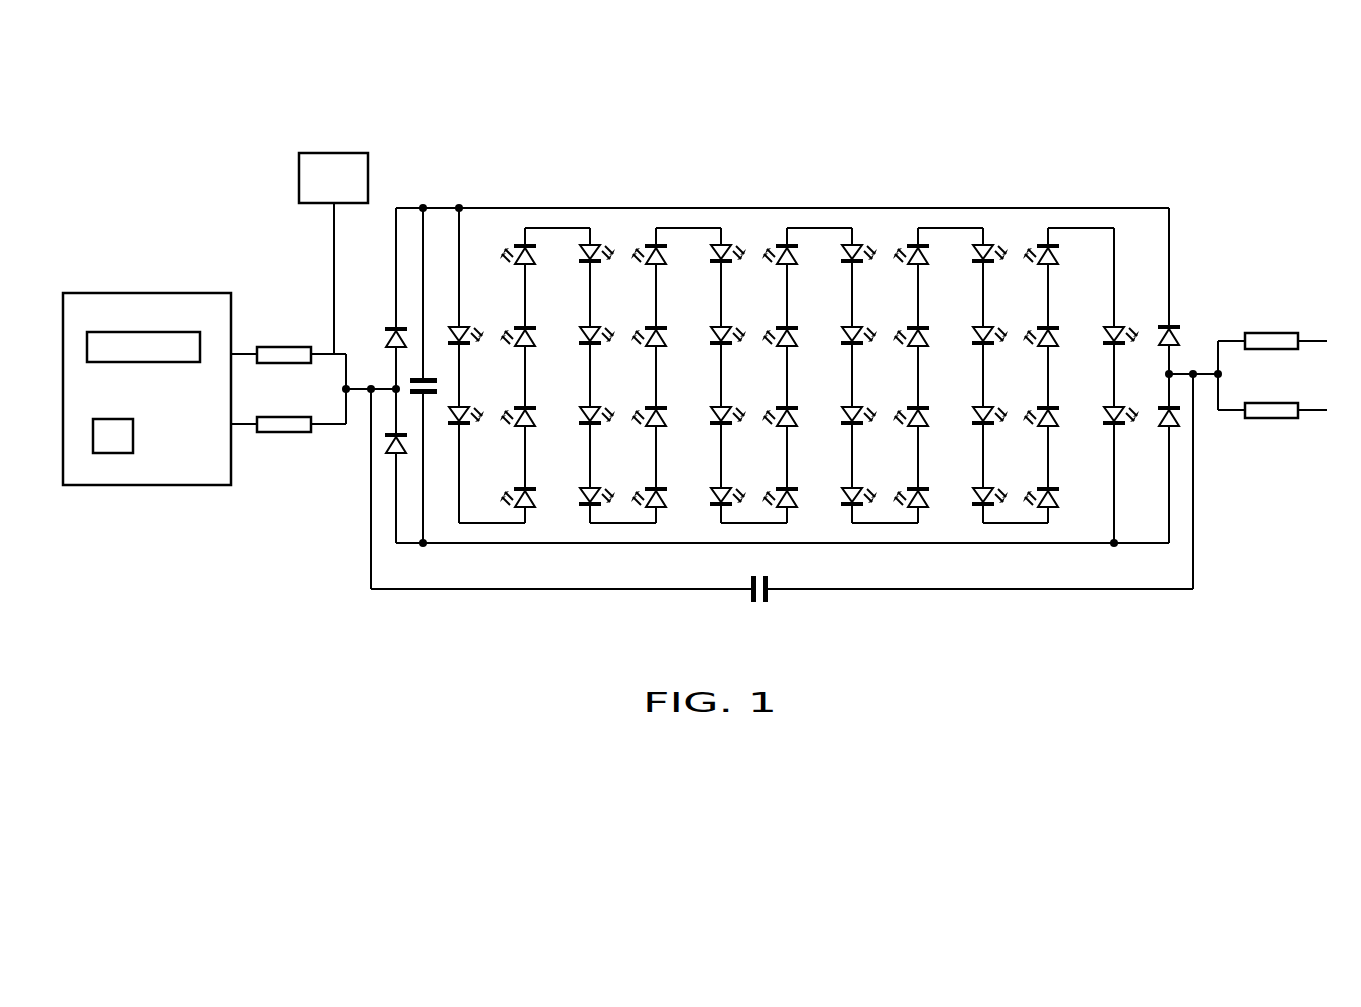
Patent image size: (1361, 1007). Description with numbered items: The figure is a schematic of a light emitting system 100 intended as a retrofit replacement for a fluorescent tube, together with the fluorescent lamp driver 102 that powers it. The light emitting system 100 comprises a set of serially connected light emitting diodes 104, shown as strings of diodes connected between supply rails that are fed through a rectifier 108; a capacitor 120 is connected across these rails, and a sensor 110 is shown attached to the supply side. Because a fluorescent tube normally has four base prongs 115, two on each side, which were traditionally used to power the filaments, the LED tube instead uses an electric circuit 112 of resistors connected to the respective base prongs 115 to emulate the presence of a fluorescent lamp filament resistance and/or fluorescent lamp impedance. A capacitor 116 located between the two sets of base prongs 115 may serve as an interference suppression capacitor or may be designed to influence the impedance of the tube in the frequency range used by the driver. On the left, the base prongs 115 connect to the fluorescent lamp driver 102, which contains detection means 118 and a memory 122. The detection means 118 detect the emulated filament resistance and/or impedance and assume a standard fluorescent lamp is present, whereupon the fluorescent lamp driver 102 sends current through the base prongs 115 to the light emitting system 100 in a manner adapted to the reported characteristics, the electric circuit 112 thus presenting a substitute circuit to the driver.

The light emitting system 100 is at (1068, 106).
The fluorescent lamp driver 102 is at (151, 293).
The light emitting diode 104 is at (522, 245).
The rectifier 108 is at (394, 326).
The sensor 110 is at (299, 178).
The electric circuit 112 is at (292, 318).
The base prongs 115 is at (247, 354).
The capacitor 116 is at (769, 580).
The detection means 118 is at (185, 362).
The capacitor 120 is at (410, 378).
The memory 122 is at (133, 440).